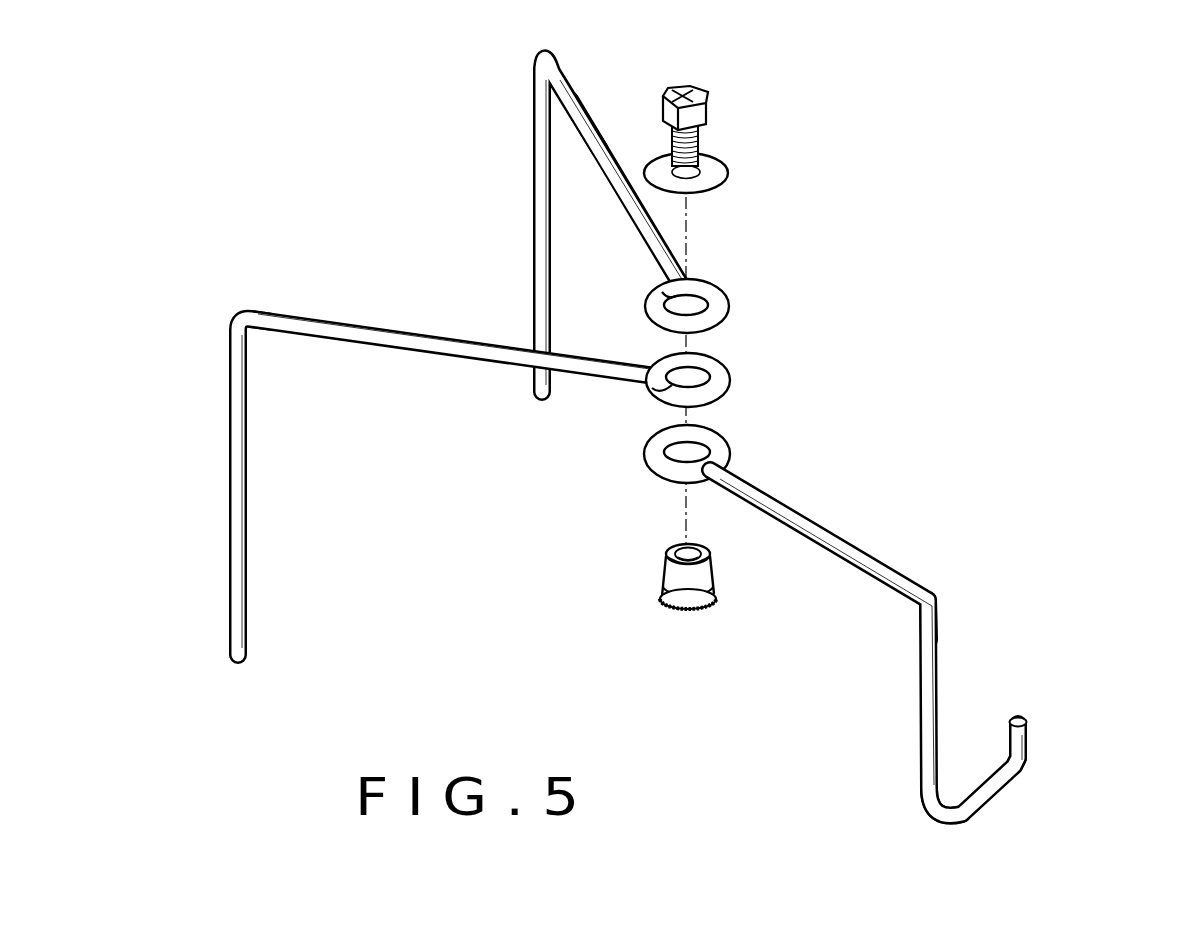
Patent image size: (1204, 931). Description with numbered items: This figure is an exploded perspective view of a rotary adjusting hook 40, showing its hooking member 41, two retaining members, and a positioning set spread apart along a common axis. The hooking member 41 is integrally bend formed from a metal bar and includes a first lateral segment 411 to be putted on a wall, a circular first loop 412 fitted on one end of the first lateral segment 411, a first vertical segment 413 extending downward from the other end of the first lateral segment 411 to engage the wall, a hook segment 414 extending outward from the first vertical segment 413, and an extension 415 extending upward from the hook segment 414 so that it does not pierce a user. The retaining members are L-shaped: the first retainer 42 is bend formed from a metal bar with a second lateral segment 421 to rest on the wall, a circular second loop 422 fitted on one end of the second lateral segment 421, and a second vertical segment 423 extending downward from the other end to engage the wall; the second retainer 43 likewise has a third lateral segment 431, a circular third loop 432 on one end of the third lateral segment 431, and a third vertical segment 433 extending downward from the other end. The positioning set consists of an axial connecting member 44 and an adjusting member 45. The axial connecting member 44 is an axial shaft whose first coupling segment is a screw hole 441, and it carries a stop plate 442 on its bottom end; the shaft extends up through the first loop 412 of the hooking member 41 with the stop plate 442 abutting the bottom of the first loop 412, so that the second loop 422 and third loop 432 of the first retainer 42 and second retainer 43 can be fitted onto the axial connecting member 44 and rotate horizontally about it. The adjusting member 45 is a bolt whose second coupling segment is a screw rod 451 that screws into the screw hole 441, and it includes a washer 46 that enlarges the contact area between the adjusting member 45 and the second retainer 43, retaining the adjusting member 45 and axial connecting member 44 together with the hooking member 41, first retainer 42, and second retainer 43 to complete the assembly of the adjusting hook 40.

The rotary adjusting hook 40 is at (922, 304).
The hooking member 41 is at (865, 538).
The first lateral segment 411 is at (776, 502).
The first loop 412 is at (702, 437).
The first vertical segment 413 is at (928, 668).
The hook segment 414 is at (999, 792).
The extension 415 is at (1025, 732).
The first retainer 42 is at (385, 348).
The second lateral segment 421 is at (467, 348).
The second loop 422 is at (718, 377).
The second vertical segment 423 is at (244, 557).
The second retainer 43 is at (588, 98).
The third lateral segment 431 is at (626, 198).
The third loop 432 is at (718, 306).
The third vertical segment 433 is at (538, 153).
The axial connecting member 44 is at (666, 603).
The screw hole 441 is at (665, 560).
The stop plate 442 is at (691, 614).
The adjusting member 45 is at (707, 110).
The screw rod 451 is at (701, 145).
The washer 46 is at (714, 183).